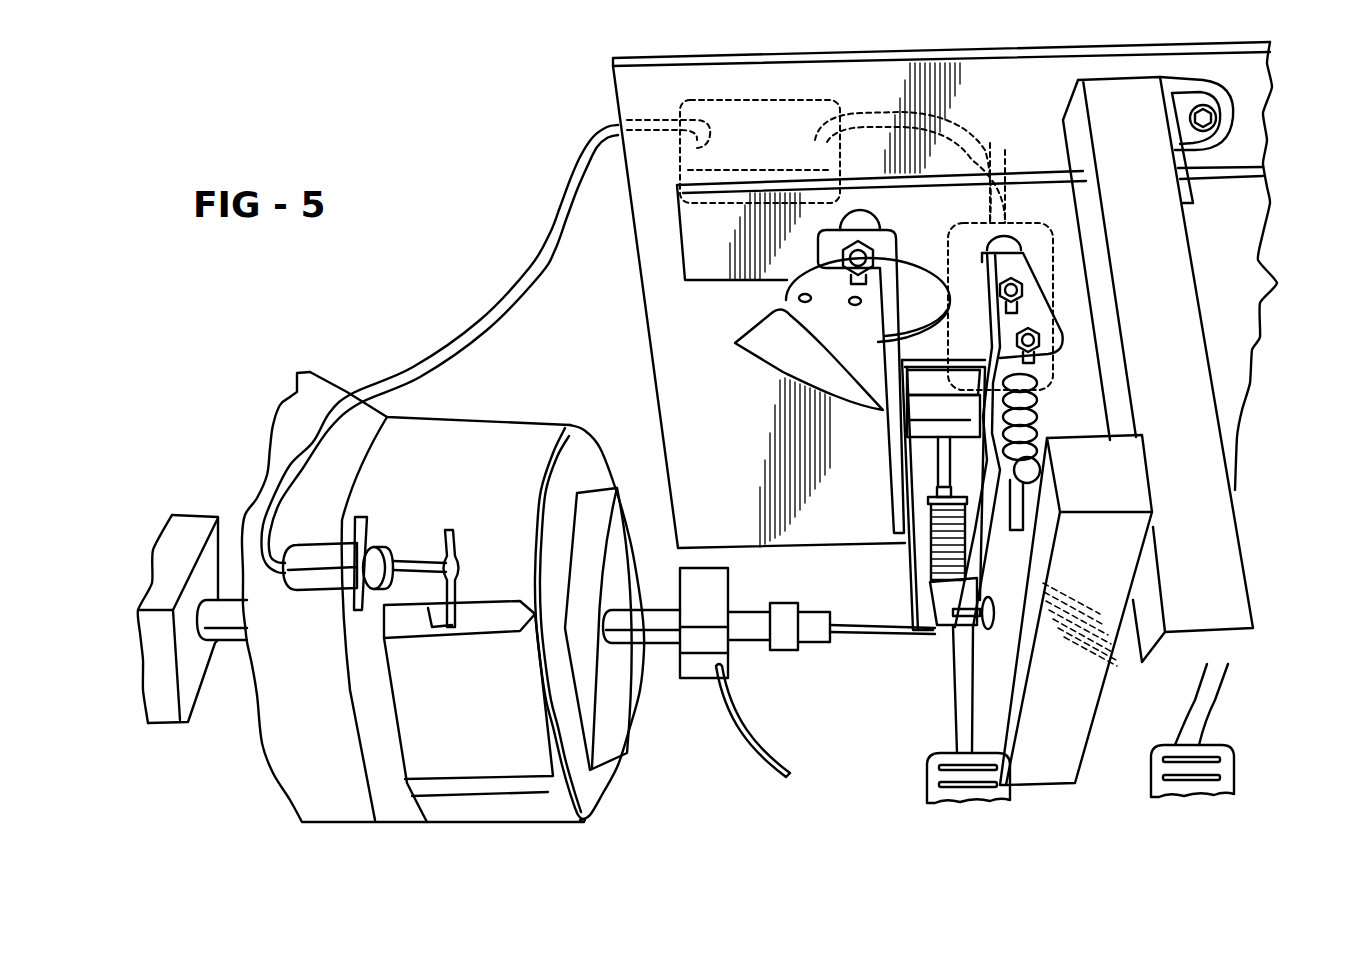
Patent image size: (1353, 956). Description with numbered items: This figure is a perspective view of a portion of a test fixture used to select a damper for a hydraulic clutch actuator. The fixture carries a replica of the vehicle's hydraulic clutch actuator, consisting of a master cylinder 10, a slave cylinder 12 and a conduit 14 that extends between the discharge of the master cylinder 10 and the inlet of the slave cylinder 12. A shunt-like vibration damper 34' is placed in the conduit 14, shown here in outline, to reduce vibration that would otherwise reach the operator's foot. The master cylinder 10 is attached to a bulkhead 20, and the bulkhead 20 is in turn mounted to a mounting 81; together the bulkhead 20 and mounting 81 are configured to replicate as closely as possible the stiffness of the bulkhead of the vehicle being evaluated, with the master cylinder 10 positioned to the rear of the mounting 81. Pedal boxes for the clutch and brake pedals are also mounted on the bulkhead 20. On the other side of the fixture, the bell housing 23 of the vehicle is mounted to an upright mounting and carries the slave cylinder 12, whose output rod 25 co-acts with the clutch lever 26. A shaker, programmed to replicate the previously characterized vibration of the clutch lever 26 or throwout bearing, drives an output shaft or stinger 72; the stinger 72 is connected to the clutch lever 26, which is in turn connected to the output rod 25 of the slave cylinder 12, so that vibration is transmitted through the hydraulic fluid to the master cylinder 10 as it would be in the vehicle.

The master cylinder 10 is at (1032, 223).
The slave cylinder 12 is at (327, 553).
The conduit 14 is at (483, 324).
The bulkhead 20 is at (1245, 244).
The bell housing 23 is at (550, 810).
The output rod 25 is at (423, 560).
The clutch lever 26 is at (452, 618).
The vibration damper 34' is at (816, 119).
The stinger 72 is at (230, 640).
The mounting 81 is at (1000, 99).